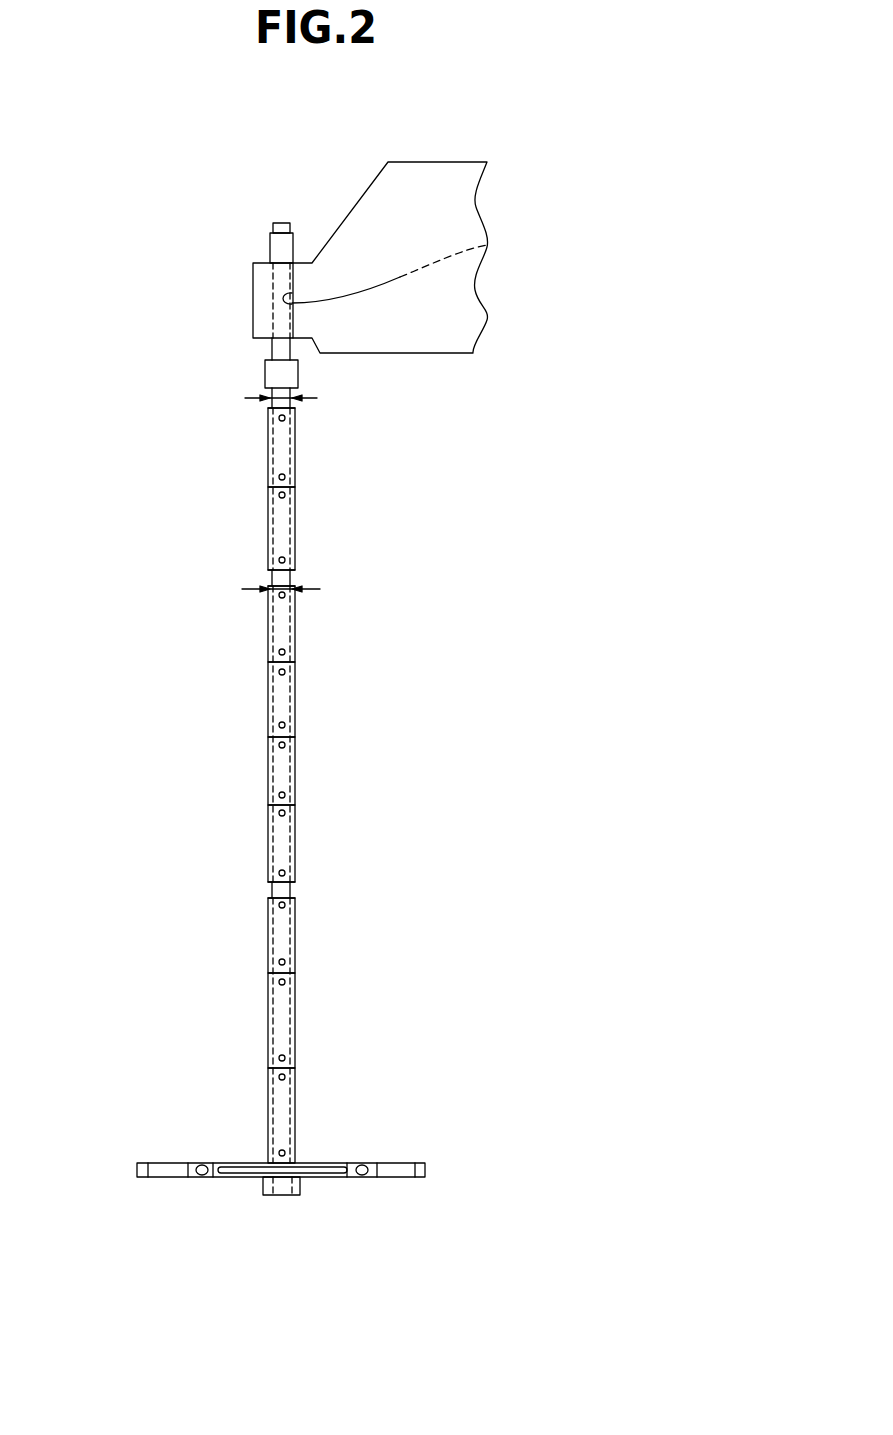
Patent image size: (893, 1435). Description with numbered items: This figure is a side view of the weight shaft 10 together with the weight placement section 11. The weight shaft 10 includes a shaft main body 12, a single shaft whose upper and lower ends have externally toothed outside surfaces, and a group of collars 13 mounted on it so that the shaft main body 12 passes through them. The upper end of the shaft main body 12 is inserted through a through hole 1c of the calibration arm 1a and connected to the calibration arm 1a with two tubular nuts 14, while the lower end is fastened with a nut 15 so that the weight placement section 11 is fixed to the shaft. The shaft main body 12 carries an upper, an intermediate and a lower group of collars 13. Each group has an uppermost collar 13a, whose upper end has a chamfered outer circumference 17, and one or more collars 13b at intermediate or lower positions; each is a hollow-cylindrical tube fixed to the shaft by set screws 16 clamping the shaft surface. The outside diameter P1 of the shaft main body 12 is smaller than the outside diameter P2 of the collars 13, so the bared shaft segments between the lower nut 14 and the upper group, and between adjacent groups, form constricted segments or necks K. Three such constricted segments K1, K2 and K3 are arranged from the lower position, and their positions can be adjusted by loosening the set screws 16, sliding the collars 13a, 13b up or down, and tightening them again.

The calibration arm 1a is at (420, 182).
The through hole 1c is at (487, 245).
The tubular nut 14 is at (278, 247).
The shaft main body 12 is at (277, 348).
The outside diameter of the shaft main body P1 is at (258, 397).
The outside diameter of the collars P2 is at (310, 590).
The outer circumference 17 is at (273, 403).
The collars 13 is at (103, 447).
The uppermost collar 13a is at (280, 443).
The collar 13b is at (280, 537).
The set screw 16 is at (287, 477).
The weight shaft 10 is at (333, 489).
The constricted segment K3 is at (308, 407).
The constricted segment K2 is at (305, 578).
The constricted segment K1 is at (305, 886).
The constricted segment K is at (522, 838).
The weight placement section 11 is at (158, 1181).
The nut 15 is at (297, 1195).